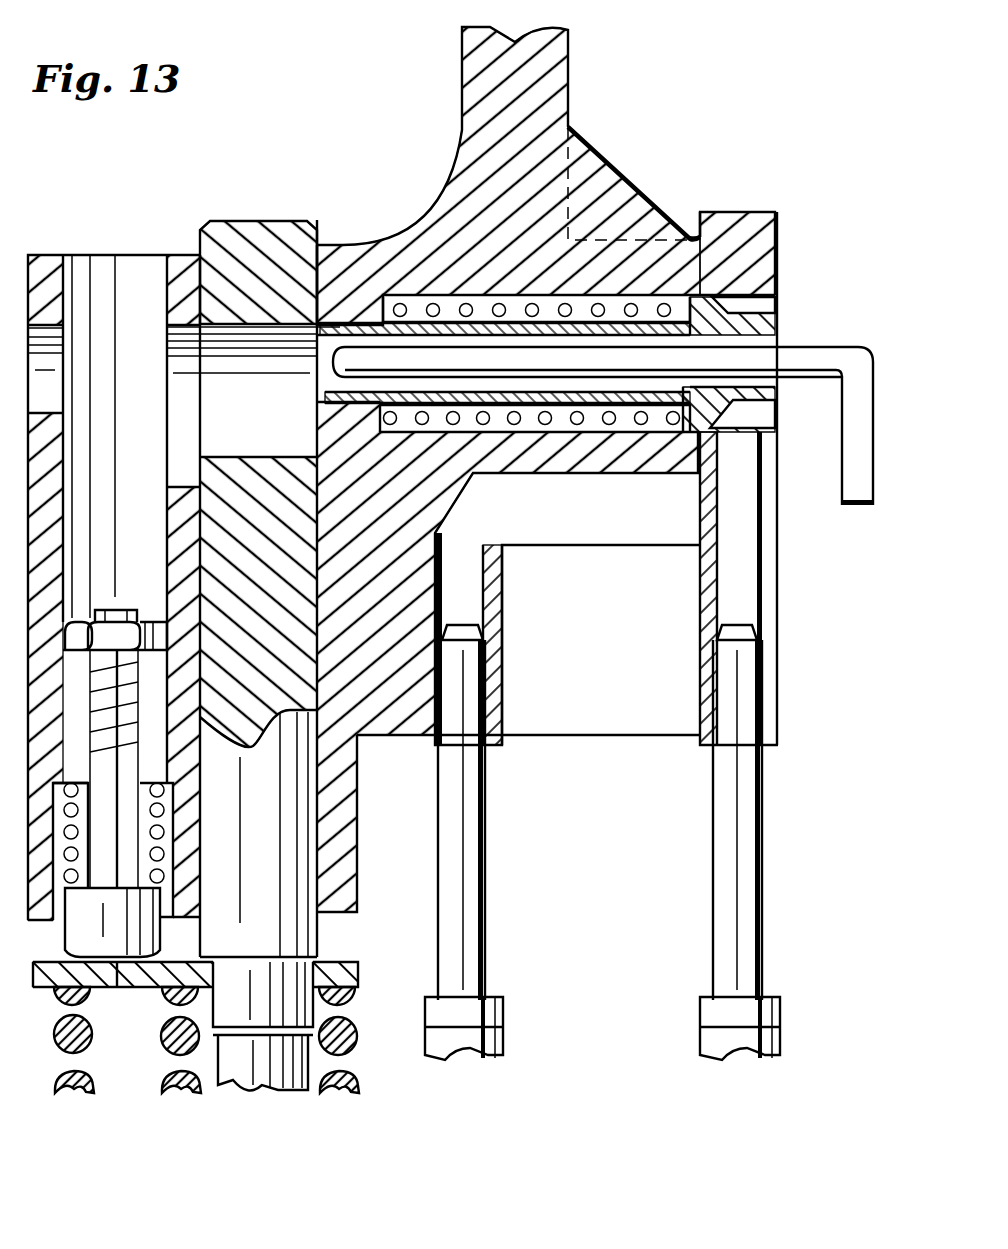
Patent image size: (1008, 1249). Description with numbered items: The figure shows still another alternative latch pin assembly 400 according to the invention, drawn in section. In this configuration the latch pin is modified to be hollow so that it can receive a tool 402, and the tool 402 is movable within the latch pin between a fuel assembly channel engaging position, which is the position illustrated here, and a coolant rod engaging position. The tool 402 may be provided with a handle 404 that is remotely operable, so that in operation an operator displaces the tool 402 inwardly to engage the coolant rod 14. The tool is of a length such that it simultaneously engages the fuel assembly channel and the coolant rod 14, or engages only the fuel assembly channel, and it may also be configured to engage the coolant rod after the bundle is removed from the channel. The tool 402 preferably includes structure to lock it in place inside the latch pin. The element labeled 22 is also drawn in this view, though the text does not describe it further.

The coolant rod 14 is at (273, 230).
The housing block 22 is at (762, 226).
The latch pin assembly 400 is at (763, 110).
The tool 402 is at (862, 435).
The handle 404 is at (853, 506).